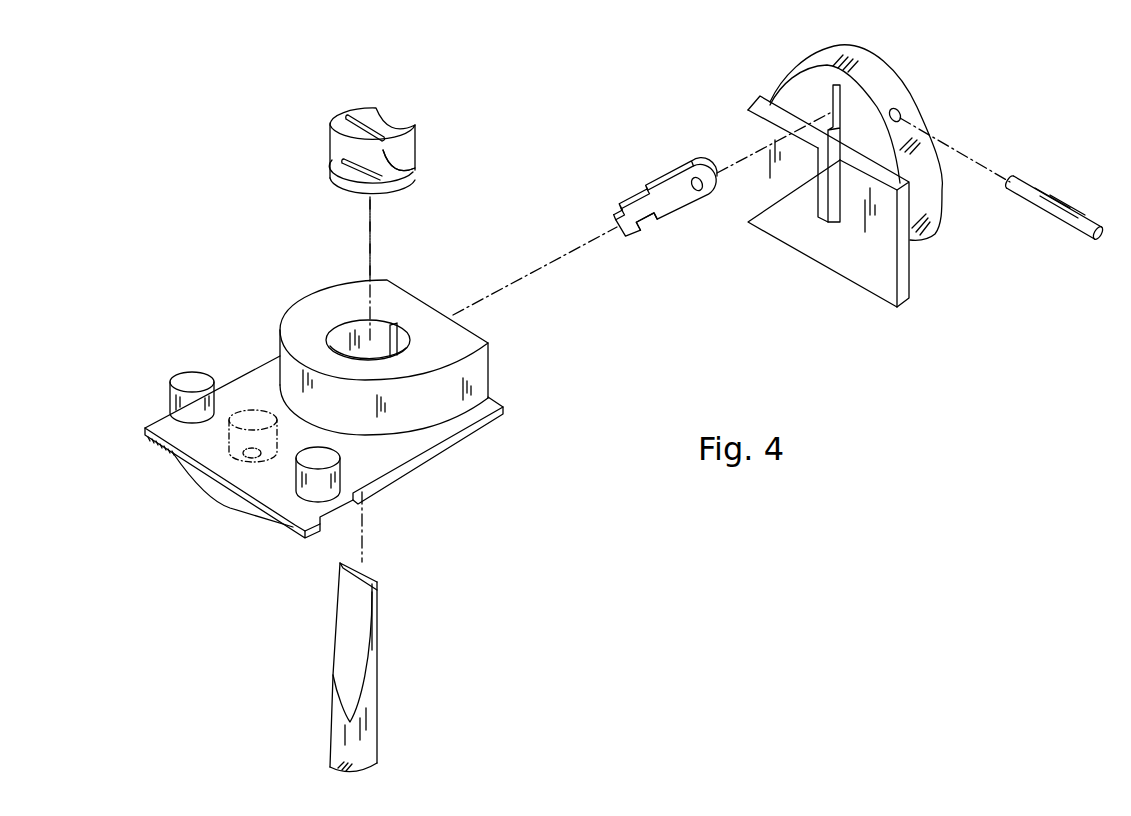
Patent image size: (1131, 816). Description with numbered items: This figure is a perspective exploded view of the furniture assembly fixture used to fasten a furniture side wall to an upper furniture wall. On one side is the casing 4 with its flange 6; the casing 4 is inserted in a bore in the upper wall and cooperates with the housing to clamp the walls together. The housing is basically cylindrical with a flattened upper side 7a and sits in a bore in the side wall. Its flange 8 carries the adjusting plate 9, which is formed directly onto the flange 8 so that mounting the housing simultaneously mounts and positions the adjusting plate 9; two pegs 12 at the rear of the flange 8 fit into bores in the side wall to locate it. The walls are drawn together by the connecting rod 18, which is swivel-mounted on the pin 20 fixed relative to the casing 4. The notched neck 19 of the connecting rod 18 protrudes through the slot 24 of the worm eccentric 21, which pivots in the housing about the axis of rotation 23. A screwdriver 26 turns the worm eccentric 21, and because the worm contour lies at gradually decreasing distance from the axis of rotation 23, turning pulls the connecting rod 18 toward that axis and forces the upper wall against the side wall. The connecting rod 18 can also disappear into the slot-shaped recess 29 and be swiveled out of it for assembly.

The casing 4 is at (897, 85).
The flange 6 is at (897, 280).
The flattened upper side 7a is at (473, 328).
The flange 8 is at (430, 450).
The adjusting plate 9 is at (237, 503).
The pegs 12 is at (190, 378).
The connecting rod 18 is at (676, 200).
The notched neck 19 is at (648, 223).
The pin 20 is at (1033, 183).
The worm eccentric 21 is at (309, 155).
The axis of rotation 23 is at (373, 230).
The slot 24 is at (380, 183).
The screwdriver 26 is at (373, 600).
The slot-shaped recess 29 is at (826, 222).